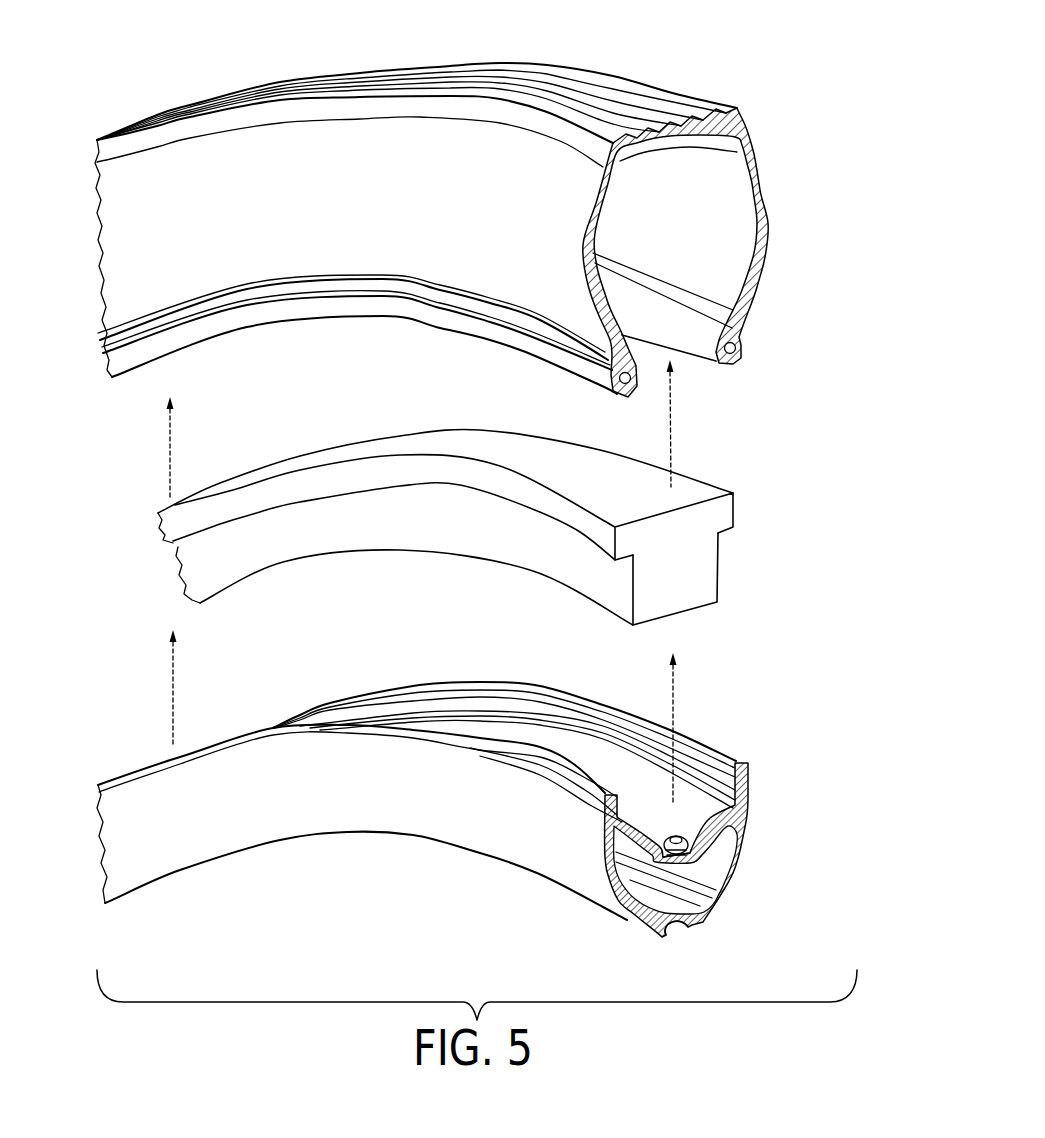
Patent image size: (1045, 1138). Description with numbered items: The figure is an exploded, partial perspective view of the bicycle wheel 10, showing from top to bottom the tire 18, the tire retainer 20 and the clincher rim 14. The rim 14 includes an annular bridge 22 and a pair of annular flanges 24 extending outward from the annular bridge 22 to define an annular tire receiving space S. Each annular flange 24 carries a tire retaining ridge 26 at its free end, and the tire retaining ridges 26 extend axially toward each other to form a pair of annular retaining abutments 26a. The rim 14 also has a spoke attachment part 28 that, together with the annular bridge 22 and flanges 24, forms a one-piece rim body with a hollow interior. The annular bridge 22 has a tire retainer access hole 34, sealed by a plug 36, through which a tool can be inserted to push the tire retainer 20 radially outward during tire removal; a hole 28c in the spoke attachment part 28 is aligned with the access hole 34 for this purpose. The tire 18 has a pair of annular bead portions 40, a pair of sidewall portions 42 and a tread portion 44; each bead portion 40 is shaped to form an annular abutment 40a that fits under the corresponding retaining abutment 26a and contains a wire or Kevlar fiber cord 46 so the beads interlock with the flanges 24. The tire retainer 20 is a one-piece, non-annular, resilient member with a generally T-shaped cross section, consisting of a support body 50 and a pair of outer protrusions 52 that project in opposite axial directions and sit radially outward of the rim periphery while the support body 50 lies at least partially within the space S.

The wheel assembly 10 is at (472, 219).
The clincher rim 14 is at (475, 819).
The tire 18 is at (664, 252).
The tire retainer 20 is at (498, 527).
The annular bridge 22 is at (683, 837).
The annular flanges 24 is at (750, 802).
The tire retaining ridge 26 is at (744, 758).
The annular retaining abutments 26a is at (577, 712).
The spoke attachment part 28 is at (713, 917).
The hole 28c is at (675, 932).
The tire retainer access hole 34 is at (705, 865).
The plug 36 is at (688, 841).
The annular bead portions 40 is at (741, 345).
The annular abutment 40a is at (737, 333).
The sidewall portions 42 is at (768, 232).
The tread portion 44 is at (608, 100).
The wire or Kevlar fiber cord 46 is at (735, 362).
The support body 50 is at (690, 563).
The outer protrusions 52 is at (736, 516).
The annular tire receiving space S is at (652, 815).